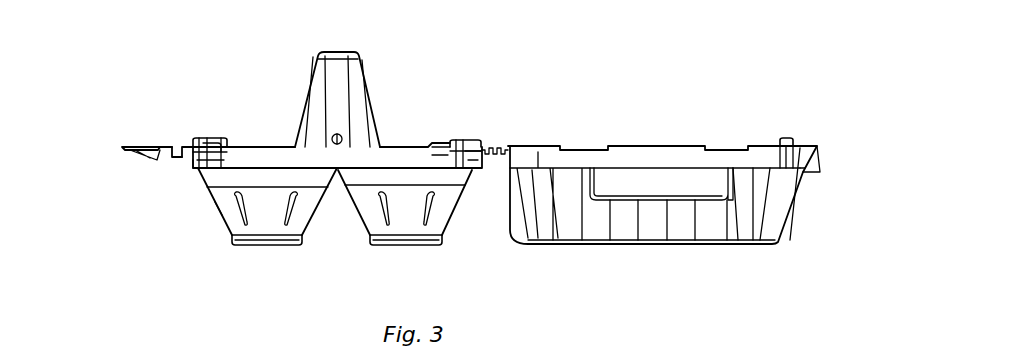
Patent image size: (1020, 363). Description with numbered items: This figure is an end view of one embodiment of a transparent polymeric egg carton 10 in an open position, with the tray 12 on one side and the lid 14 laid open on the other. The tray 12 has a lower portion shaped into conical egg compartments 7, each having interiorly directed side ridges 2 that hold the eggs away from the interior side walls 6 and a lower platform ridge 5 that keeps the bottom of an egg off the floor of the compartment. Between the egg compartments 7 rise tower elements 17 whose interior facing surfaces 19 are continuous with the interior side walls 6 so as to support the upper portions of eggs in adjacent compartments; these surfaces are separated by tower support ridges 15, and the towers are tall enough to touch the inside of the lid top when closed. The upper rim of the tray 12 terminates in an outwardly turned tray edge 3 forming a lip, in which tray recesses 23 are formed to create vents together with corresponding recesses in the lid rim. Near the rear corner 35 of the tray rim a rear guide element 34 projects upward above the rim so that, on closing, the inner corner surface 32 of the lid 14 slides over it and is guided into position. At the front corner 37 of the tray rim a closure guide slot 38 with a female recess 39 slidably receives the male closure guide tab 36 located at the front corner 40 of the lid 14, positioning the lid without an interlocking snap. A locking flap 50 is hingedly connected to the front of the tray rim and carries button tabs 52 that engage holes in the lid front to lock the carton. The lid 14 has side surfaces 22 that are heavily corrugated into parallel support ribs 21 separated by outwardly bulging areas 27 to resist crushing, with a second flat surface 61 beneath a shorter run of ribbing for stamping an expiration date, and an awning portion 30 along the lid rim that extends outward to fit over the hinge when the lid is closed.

The egg carton 10 is at (676, 61).
The tray 12 is at (52, 53).
The lid 14 is at (845, 148).
The tower support ridges 15 is at (338, 64).
The tower elements 17 is at (321, 53).
The interior facing surface of the towers 19 is at (355, 86).
The tray recesses 23 is at (392, 162).
The tray edge 3 is at (437, 143).
The rear guide element 34 is at (465, 140).
The rear corner of the tray rim 35 is at (472, 162).
The closure guide slot 38 is at (197, 140).
The female recess 39 is at (211, 140).
The front corner of the tray rim 37 is at (193, 169).
The locking flap 50 is at (120, 147).
The button tabs 52 is at (147, 158).
The egg compartments 7 is at (212, 207).
The side ridges 2 is at (246, 208).
The interior side walls 6 is at (308, 202).
The lower platform ridge 5 is at (298, 238).
The awning portion 30 is at (822, 147).
The inner corner surface of the lid 32 is at (528, 145).
The outwardly bulging areas 27 is at (722, 148).
The second flat surface 61 is at (655, 163).
The side surfaces of the lid 22 is at (627, 230).
The support ribs 21 is at (727, 243).
The closure guide tab 36 is at (785, 140).
The front corner of the lid 40 is at (803, 145).